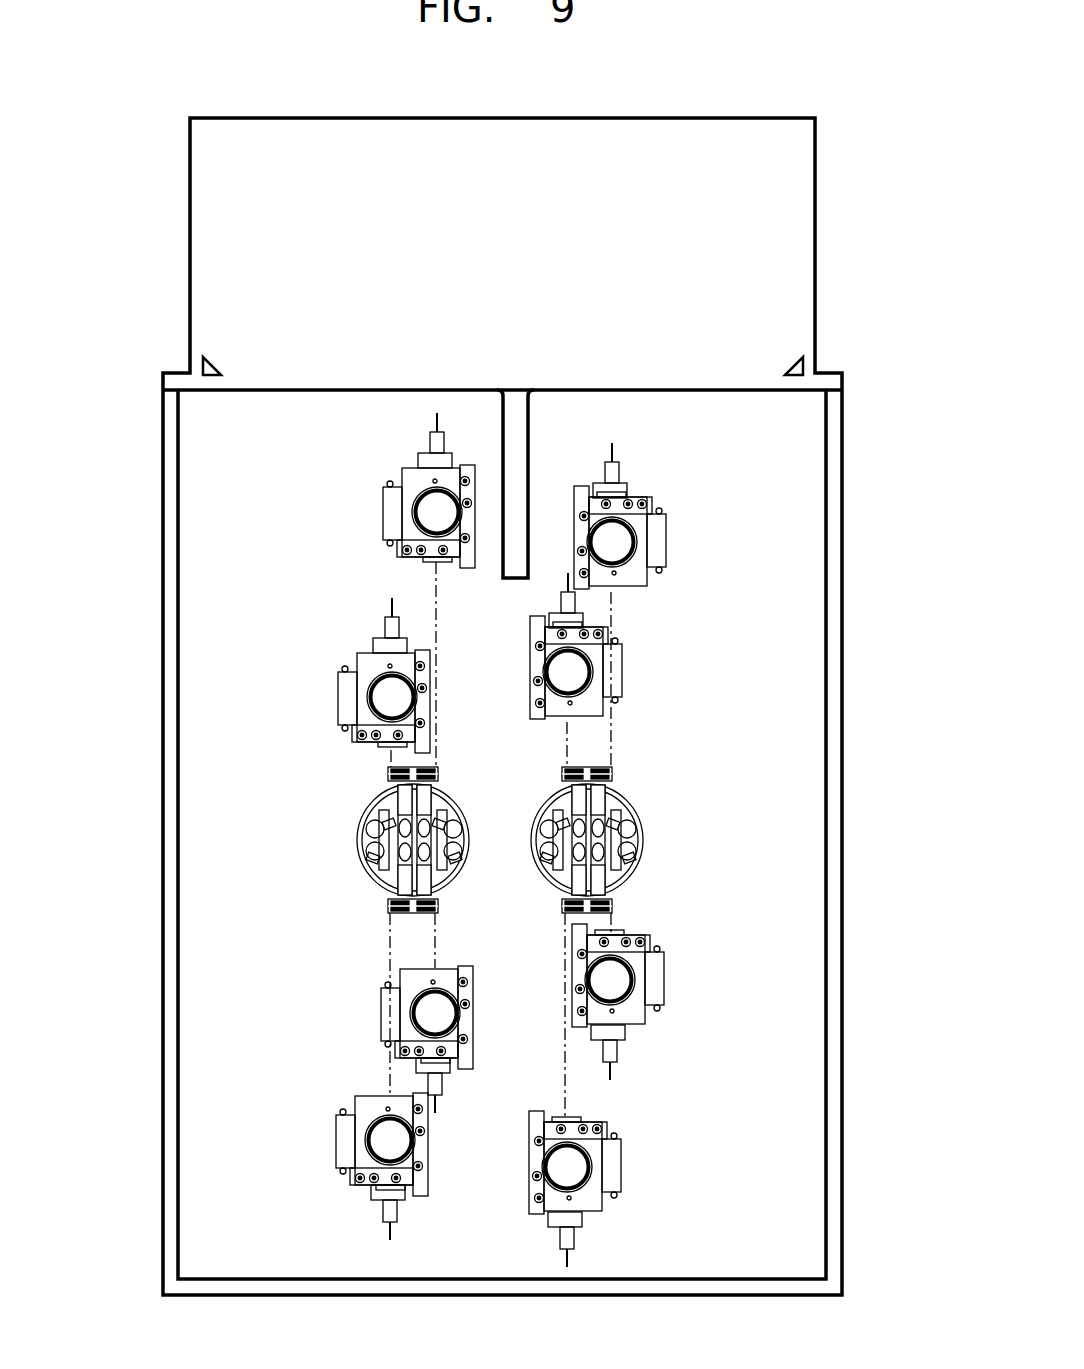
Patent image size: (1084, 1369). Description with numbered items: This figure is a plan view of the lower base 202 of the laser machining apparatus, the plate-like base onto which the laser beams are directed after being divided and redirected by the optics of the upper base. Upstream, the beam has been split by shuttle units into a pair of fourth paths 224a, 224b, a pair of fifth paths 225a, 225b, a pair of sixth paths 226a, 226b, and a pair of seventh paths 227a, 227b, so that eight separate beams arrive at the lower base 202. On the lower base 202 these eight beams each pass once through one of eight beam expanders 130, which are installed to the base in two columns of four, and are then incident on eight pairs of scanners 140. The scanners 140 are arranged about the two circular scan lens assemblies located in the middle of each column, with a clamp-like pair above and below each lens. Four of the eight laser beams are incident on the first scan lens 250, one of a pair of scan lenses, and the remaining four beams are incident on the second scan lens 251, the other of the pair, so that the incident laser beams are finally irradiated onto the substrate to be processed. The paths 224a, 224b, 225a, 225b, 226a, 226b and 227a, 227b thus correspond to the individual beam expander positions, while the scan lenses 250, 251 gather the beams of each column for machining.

The beam expander 130 is at (612, 542).
The scanner 140 is at (403, 799).
The lower base 202 is at (780, 467).
The fourth path 224a is at (393, 757).
The fourth path 224b is at (567, 742).
The fifth path 225a is at (388, 1068).
The fifth path 225b is at (565, 1097).
The sixth path 226a is at (613, 600).
The sixth path 226b is at (440, 590).
The seventh path 227a is at (612, 925).
The seventh path 227b is at (390, 932).
The first scan lens 250 is at (377, 810).
The second scan lens 251 is at (623, 810).